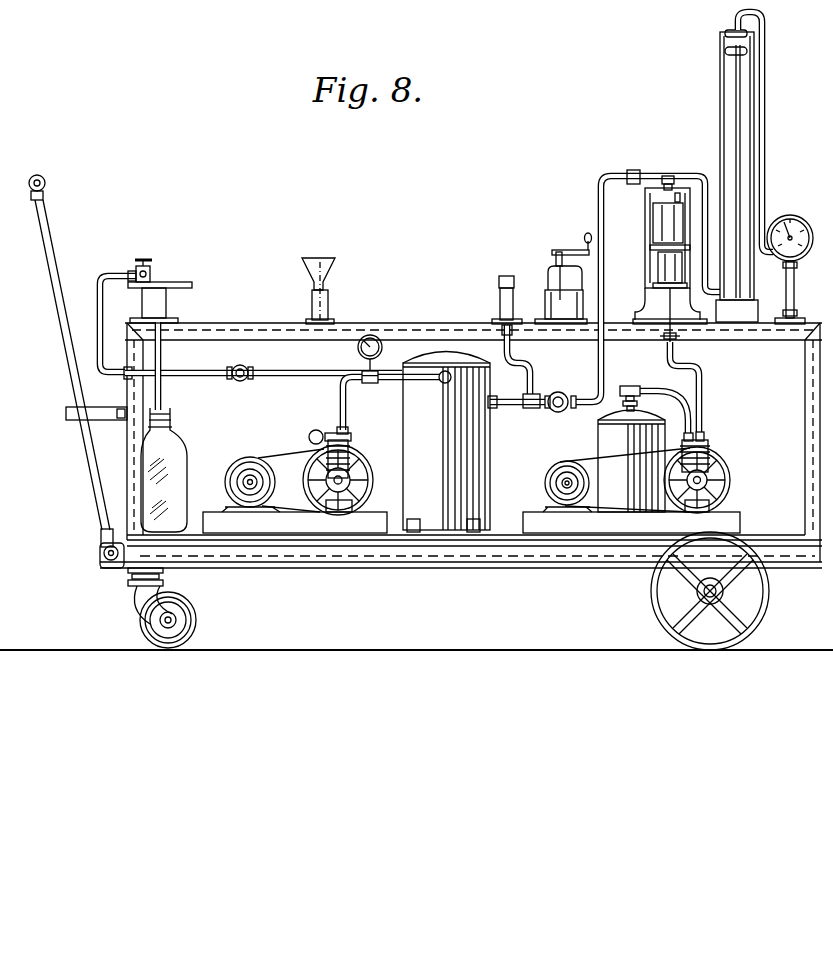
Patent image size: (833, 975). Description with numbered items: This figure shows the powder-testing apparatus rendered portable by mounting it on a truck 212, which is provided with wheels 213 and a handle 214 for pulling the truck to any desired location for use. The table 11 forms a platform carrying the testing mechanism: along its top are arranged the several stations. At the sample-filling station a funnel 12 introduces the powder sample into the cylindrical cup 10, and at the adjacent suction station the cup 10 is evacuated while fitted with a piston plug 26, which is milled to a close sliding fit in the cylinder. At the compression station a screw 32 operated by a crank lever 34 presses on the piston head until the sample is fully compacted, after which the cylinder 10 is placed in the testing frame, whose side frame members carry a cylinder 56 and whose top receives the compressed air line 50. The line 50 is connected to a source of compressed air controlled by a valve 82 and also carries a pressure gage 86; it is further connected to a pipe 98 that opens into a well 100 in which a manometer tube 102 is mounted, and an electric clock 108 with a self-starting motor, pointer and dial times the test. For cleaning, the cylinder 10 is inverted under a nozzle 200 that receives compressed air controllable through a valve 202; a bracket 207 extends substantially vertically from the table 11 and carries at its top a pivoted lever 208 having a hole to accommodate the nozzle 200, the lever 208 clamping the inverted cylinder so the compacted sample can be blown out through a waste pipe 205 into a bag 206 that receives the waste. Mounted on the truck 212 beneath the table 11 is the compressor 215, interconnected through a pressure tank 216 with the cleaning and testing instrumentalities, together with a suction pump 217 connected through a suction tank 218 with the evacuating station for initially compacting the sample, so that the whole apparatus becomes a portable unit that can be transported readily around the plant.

The cylindrical cup 10 is at (167, 305).
The table 11 is at (402, 330).
The funnel 12 is at (334, 263).
The piston plug 26 is at (497, 283).
The screw 32 is at (547, 262).
The crank lever 34 is at (583, 245).
The compressed air line 50 is at (601, 192).
The cylinder 56 is at (667, 272).
The valve 82 is at (560, 389).
The pressure gage 86 is at (357, 350).
The pipe 98 is at (707, 188).
The well 100 is at (747, 318).
The manometer tube 102 is at (736, 106).
The electric clock 108 is at (789, 215).
The nozzle 200 is at (172, 255).
The valve 202 is at (137, 269).
The waste pipe 205 is at (165, 385).
The bag 206 is at (187, 462).
The bracket 207 is at (146, 298).
The lever 208 is at (193, 286).
The truck 212 is at (458, 566).
The wheels 213 is at (203, 620).
The handle 214 is at (64, 330).
The compressor 215 is at (348, 450).
The pressure tank 216 is at (470, 446).
The suction pump 217 is at (707, 452).
The suction tank 218 is at (612, 445).